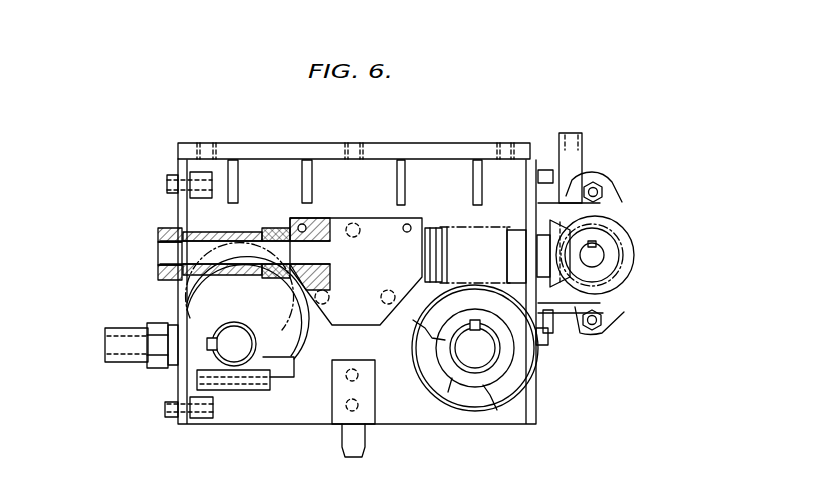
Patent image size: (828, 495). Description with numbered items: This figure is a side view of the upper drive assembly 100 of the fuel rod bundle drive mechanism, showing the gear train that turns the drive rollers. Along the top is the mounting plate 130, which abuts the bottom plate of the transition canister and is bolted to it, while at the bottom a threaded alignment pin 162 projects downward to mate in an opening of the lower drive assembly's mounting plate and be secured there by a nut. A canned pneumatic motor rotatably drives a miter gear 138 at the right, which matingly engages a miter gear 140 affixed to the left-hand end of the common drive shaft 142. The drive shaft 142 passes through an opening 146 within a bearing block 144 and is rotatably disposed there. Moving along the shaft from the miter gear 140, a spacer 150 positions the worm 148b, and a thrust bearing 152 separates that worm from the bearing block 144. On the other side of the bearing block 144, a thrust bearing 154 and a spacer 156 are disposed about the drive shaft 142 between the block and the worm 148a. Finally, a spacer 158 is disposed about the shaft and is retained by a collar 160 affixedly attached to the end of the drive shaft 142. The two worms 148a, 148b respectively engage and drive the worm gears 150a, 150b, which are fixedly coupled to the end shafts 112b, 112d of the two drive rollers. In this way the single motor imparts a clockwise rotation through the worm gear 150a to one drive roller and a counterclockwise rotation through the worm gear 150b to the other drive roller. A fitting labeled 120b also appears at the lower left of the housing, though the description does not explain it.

The upper drive assembly 100 is at (214, 126).
The mounting plate 130 is at (456, 152).
The spacer 158 is at (199, 228).
The opening 146 is at (280, 258).
The collar 160 is at (160, 238).
The common drive shaft 142 is at (165, 281).
The worm 148a is at (249, 228).
The bearing block 144 is at (373, 218).
The thrust bearing 154 is at (287, 200).
The thrust bearing 152 is at (433, 230).
The worm 148b is at (486, 235).
The spacer 150 is at (515, 240).
The miter gear 140 is at (582, 220).
The miter gear 138 is at (613, 266).
The worm gear 150a is at (187, 373).
The end shaft 112b is at (235, 352).
The spacer 156 is at (297, 343).
The worm gear 150b is at (527, 366).
The end shaft 112d is at (437, 397).
The alignment pin 162 is at (362, 440).
The hydraulic fitting 120b is at (106, 362).